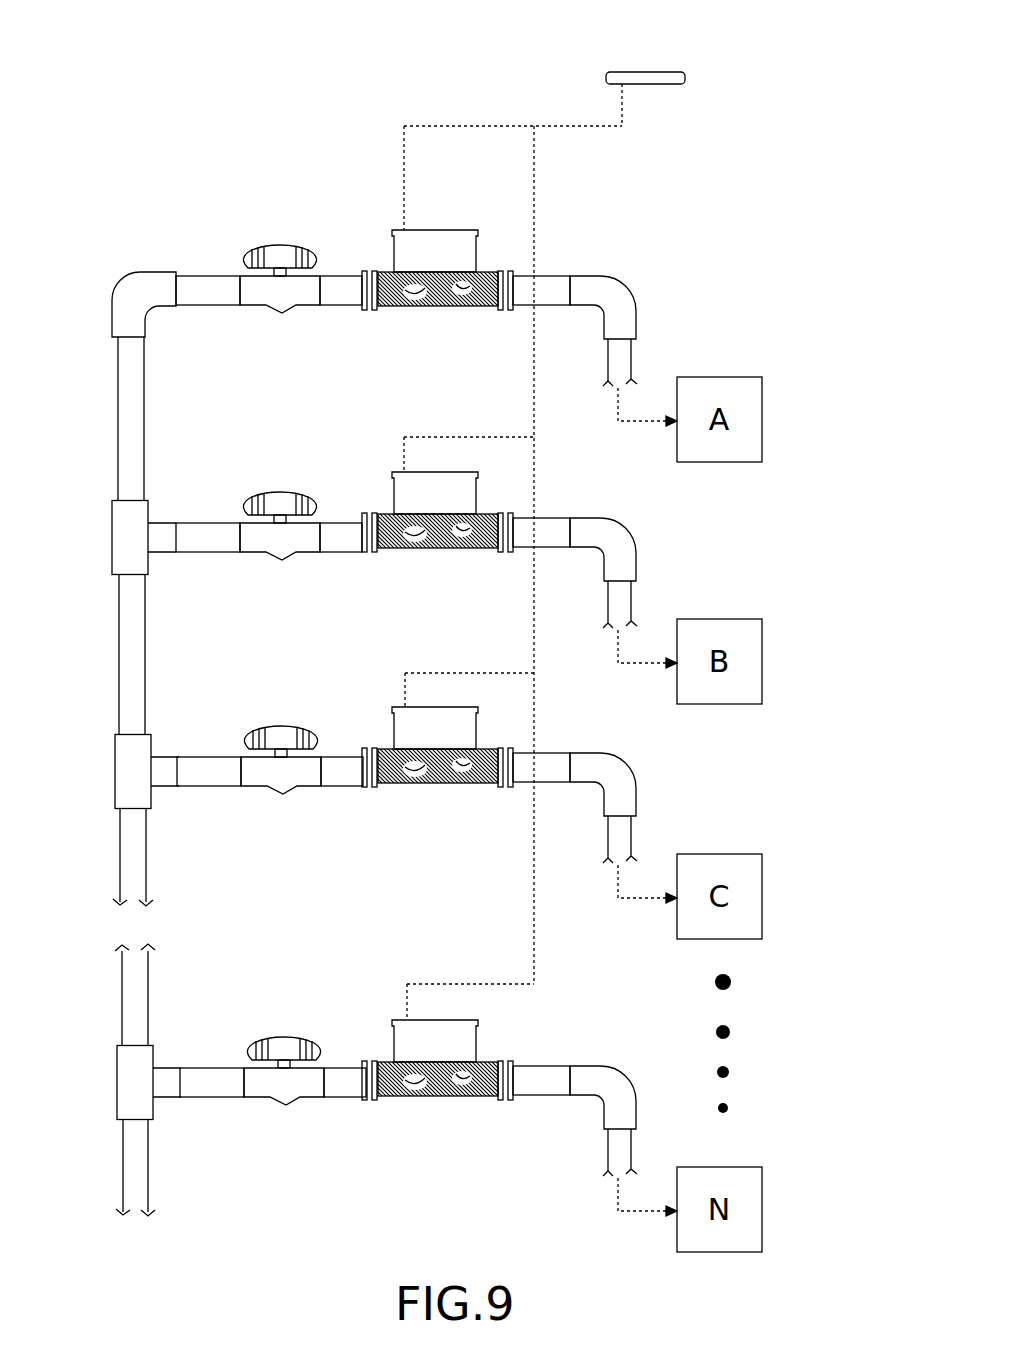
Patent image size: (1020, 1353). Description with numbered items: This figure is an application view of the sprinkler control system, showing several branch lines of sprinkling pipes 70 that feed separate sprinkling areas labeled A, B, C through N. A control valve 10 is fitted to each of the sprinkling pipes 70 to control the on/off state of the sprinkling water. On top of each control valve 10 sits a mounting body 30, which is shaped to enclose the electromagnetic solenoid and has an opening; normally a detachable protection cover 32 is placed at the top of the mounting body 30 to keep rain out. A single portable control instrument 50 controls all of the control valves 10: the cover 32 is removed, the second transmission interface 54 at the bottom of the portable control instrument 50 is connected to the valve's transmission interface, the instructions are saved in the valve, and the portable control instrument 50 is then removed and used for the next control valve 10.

The control valve 10 is at (451, 271).
The mounting body 30 is at (478, 256).
The protection cover 32 is at (432, 230).
The portable control instrument 50 is at (647, 72).
The second transmission interface 54 is at (625, 86).
The sprinkling pipe 70 is at (212, 302).